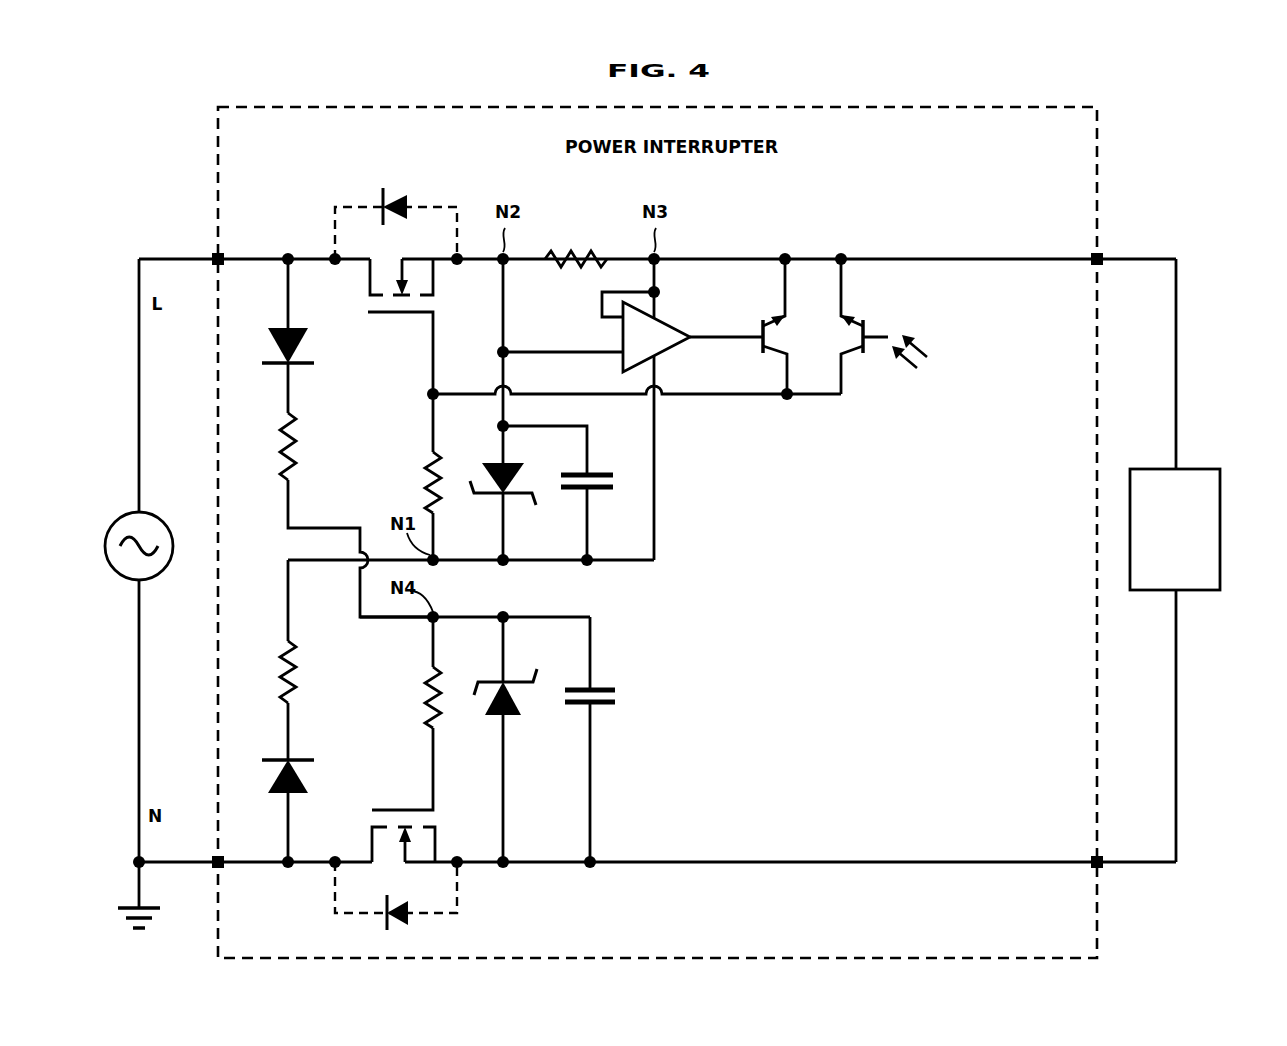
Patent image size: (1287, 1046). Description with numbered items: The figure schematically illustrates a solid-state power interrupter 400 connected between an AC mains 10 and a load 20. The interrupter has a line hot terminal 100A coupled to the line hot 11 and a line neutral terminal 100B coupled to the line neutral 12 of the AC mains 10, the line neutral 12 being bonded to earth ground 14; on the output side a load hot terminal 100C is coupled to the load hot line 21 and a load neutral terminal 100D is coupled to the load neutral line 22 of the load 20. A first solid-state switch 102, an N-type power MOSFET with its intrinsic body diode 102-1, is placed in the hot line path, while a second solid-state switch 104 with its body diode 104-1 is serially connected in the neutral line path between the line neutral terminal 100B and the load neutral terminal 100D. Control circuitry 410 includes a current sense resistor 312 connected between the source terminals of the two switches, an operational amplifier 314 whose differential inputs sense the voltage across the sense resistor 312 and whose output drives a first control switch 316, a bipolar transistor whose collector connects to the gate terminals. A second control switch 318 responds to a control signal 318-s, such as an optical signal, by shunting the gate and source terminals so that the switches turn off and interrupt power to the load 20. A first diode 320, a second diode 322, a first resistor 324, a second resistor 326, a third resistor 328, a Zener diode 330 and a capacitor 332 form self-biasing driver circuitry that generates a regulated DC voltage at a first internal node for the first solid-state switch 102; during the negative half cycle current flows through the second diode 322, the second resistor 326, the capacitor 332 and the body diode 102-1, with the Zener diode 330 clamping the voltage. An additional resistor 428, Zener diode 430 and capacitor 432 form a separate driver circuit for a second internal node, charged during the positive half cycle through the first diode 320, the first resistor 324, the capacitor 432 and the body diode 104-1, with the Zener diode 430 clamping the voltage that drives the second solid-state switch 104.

The solid-state power interrupter 400 is at (241, 105).
The control circuitry 410 is at (824, 608).
The AC mains 10 is at (104, 545).
The line hot 11 is at (139, 302).
The line neutral 12 is at (138, 820).
The earth ground 14 is at (118, 908).
The load 20 is at (1220, 518).
The load hot line 21 is at (1176, 383).
The load neutral line 22 is at (1176, 688).
The line hot terminal 100A is at (203, 248).
The line neutral terminal 100B is at (203, 872).
The load hot terminal 100C is at (1105, 250).
The load neutral terminal 100D is at (1105, 872).
The first solid-state switch 102 is at (394, 334).
The body diode 102-1 is at (407, 193).
The second solid-state switch 104 is at (397, 780).
The body diode 104-1 is at (417, 928).
The current sense resistor 312 is at (600, 243).
The operational amplifier 314 is at (662, 352).
The first control switch 316 is at (762, 320).
The second control switch 318 is at (862, 308).
The control signal 318-s is at (938, 355).
The first diode 320 is at (280, 328).
The second diode 322 is at (278, 788).
The first resistor 324 is at (283, 424).
The second resistor 326 is at (283, 648).
The third resistor 328 is at (425, 459).
The Zener diode 330 is at (517, 462).
The capacitor 332 is at (608, 470).
The resistor 428 is at (428, 676).
The Zener diode 430 is at (512, 718).
The capacitor 432 is at (610, 710).